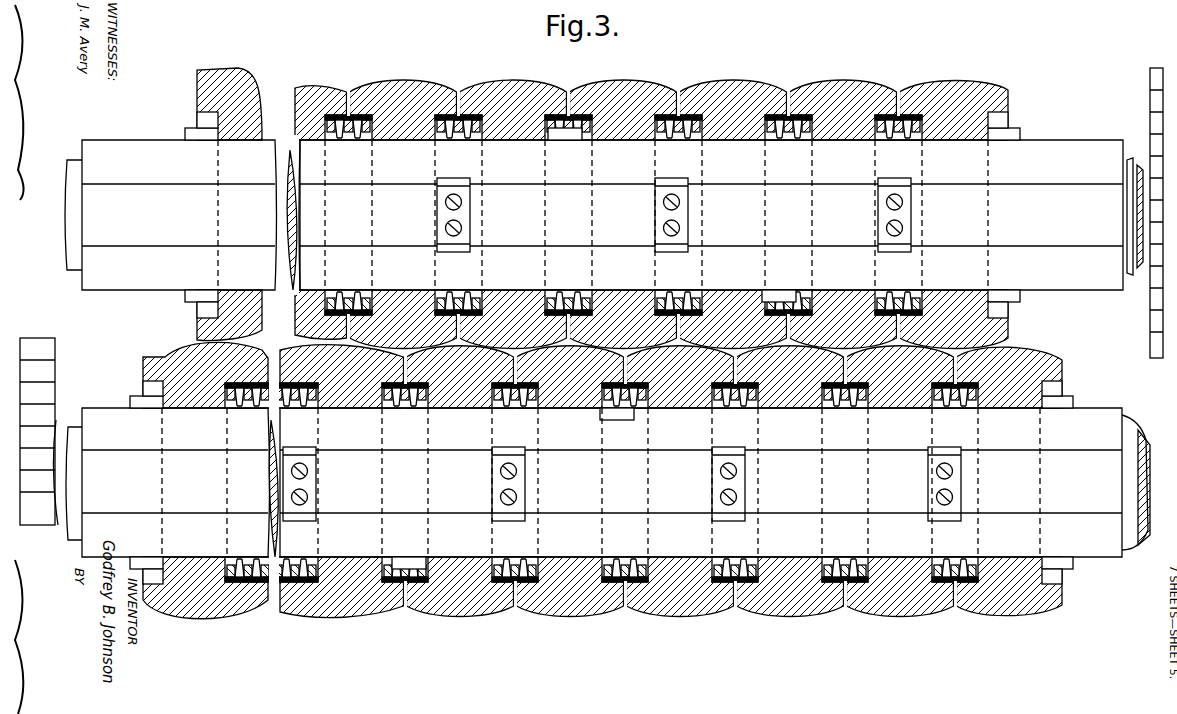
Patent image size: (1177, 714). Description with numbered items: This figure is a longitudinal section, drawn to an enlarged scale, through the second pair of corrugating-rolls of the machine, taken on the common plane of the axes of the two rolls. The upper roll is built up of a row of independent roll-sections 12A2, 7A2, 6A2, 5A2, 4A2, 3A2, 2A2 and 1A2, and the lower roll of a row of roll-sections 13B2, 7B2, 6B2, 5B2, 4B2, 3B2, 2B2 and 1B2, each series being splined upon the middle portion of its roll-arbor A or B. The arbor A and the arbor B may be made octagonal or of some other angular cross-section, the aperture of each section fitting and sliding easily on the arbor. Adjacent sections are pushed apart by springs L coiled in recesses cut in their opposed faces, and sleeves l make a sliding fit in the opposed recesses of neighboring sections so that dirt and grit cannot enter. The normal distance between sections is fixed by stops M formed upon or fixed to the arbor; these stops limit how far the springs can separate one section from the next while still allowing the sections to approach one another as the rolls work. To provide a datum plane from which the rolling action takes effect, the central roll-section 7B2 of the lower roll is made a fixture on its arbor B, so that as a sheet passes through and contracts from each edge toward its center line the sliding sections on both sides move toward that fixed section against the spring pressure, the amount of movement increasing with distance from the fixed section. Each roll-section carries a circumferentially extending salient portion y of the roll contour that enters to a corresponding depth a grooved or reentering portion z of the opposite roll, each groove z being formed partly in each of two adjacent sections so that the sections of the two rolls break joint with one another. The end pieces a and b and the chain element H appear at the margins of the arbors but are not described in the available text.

The roll-section 12A2 is at (229, 193).
The roll-section 7A2 is at (321, 192).
The roll-section 6A2 is at (403, 197).
The roll-section 5A2 is at (513, 197).
The roll-section 4A2 is at (623, 197).
The roll-section 3A2 is at (733, 197).
The roll-section 2A2 is at (843, 197).
The roll-section 1A2 is at (954, 197).
The roll-section 13B2 is at (205, 494).
The central roll-section 7B2 is at (342, 495).
The roll-section 6B2 is at (460, 496).
The roll-section 5B2 is at (570, 496).
The roll-section 4B2 is at (680, 496).
The roll-section 3B2 is at (790, 496).
The roll-section 2B2 is at (900, 496).
The roll-section 1B2 is at (1010, 496).
The springs L is at (342, 150).
The sleeves l is at (258, 392).
The reentering portion z is at (646, 350).
The salient portion y is at (245, 70).
The roll-arbor A is at (594, 215).
The roll-arbor B is at (602, 482).
The stops M is at (203, 290).
The end piece a is at (1140, 165).
The end piece b is at (70, 430).
The chain H is at (1150, 322).